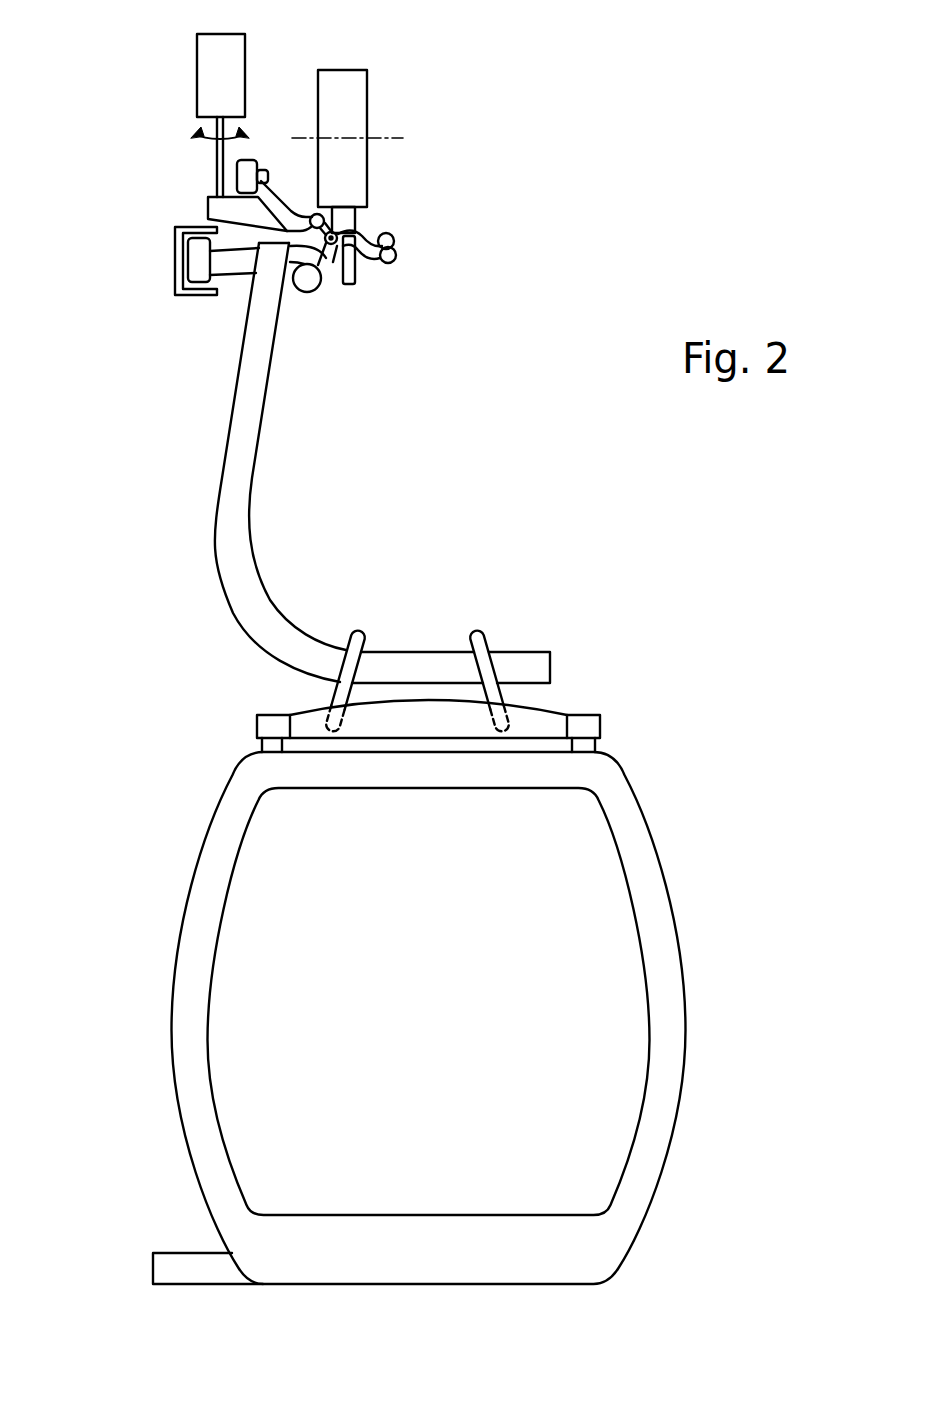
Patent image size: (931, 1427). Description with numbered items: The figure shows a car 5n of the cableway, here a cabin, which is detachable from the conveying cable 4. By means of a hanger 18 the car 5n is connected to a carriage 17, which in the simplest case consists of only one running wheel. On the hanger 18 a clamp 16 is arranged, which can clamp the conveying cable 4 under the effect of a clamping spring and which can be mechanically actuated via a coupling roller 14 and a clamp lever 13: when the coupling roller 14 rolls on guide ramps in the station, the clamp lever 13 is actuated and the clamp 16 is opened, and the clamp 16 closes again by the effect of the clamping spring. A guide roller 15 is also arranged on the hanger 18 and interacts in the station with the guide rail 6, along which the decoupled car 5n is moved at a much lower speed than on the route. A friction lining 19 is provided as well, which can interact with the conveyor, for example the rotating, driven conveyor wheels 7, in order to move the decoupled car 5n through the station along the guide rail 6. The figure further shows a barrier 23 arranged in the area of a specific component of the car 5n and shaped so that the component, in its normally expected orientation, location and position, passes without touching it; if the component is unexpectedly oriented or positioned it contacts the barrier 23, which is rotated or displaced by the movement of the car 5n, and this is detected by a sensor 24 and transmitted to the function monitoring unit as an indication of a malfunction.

The sensor 24 is at (217, 70).
The conveyor wheel 7 is at (345, 85).
The coupling roller 14 is at (248, 172).
The barrier 23 is at (218, 212).
The clamp lever 13 is at (278, 203).
The friction lining 19 is at (345, 223).
The clamp 16 is at (393, 248).
The conveying cable 4 is at (390, 260).
The carriage 17 is at (352, 282).
The guide roller 15 is at (193, 257).
The guide rail 6 is at (180, 265).
The hanger 18 is at (238, 462).
The car 5n is at (435, 1007).